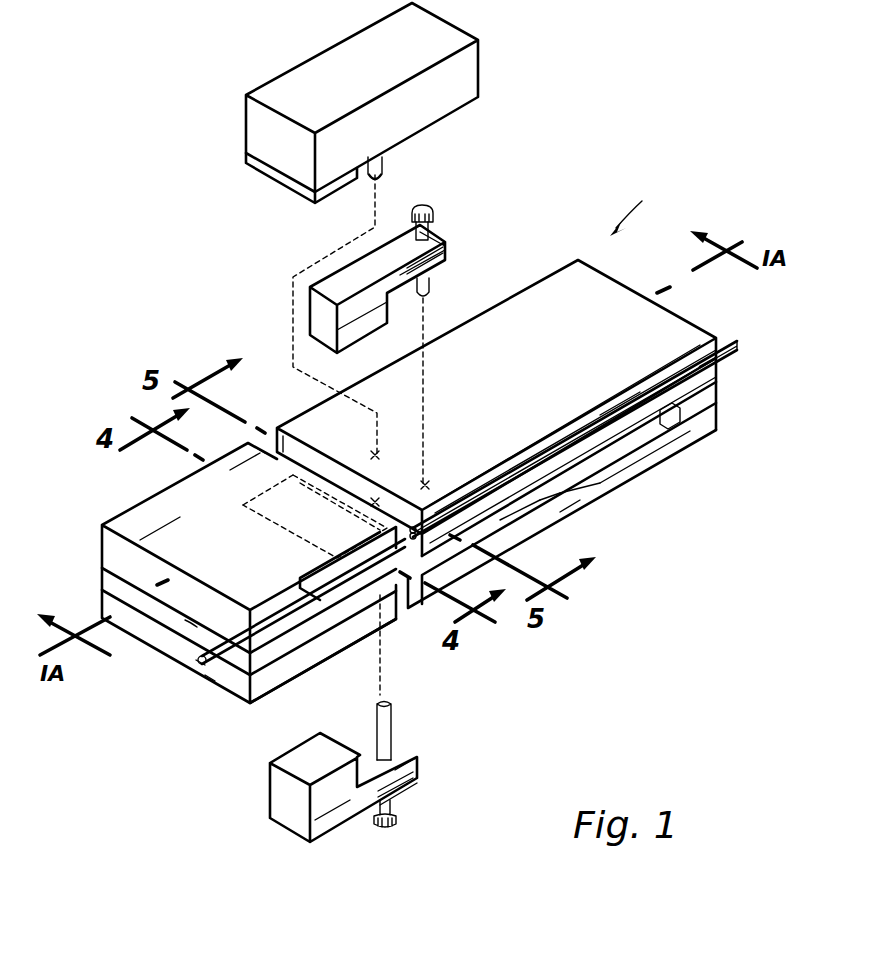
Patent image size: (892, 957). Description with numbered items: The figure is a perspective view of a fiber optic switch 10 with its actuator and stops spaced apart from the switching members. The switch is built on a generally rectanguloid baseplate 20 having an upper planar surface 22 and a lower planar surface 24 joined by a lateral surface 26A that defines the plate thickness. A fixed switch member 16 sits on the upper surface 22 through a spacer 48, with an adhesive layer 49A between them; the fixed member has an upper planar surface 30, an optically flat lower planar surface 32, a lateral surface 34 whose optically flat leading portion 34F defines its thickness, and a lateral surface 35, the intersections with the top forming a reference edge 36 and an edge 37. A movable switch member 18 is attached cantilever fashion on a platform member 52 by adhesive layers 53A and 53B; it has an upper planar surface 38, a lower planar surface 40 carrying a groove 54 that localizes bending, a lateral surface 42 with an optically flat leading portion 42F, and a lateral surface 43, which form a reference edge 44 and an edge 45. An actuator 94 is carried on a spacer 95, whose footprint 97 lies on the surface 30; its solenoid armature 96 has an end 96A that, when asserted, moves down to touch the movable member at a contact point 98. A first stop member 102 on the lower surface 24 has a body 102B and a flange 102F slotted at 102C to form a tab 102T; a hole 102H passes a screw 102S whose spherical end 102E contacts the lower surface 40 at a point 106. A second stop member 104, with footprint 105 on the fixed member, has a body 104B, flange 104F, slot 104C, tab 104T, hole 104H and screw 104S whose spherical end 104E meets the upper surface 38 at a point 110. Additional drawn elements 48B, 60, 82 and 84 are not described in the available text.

The fiber optic switch 10 is at (638, 208).
The fixed switch member 16 is at (153, 497).
The movable switch member 18 is at (310, 416).
The baseplate 20 is at (602, 467).
The upper planar surface 22 is at (602, 492).
The lower planar surface 24 is at (648, 456).
The lateral surface 26A is at (545, 541).
The upper planar surface 30 is at (207, 536).
The lower planar surface 32 is at (102, 576).
The lateral surface 34 is at (300, 664).
The leading portion of lateral surface 34F is at (393, 578).
The lateral surface 35 is at (408, 574).
The reference edge 36 is at (306, 586).
The edge 37 is at (283, 461).
The upper planar surface 38 is at (520, 389).
The lower planar surface 40 is at (636, 396).
The lateral surface 42 is at (545, 500).
The leading portion of lateral surface 42F is at (572, 506).
The lateral surface 43 is at (280, 460).
The reference edge 44 is at (548, 447).
The edge 45 is at (296, 446).
The spacer 48 is at (197, 648).
The ferrule body 48B is at (196, 661).
The adhesive layer 49A is at (185, 620).
The platform member 52 is at (718, 382).
The adhesive layer 53A is at (718, 405).
The adhesive layer 53B is at (718, 430).
The groove 54 is at (666, 428).
The groove in first stage 60 is at (214, 680).
The second optical fiber ferrule 82 is at (727, 338).
The ferrule support surface 84 is at (730, 358).
The actuator 94 is at (480, 76).
The spacer 95 is at (286, 188).
The armature 96 is at (384, 160).
The end of armature 96A is at (380, 182).
The footprint of spacer 97 is at (250, 502).
The contact point 98 is at (375, 452).
The first stop member 102 is at (270, 800).
The body 102B is at (325, 813).
The slot 102C is at (414, 774).
The spherically shaped end 102E is at (388, 702).
The flange 102F is at (417, 752).
The hole 102H is at (392, 752).
The screw 102S is at (393, 822).
The tab 102T is at (414, 779).
The second stop member 104 is at (312, 300).
The body 104B is at (352, 328).
The slot 104C is at (442, 251).
The spherical shaped end 104E is at (431, 290).
The flange 104F is at (447, 262).
The hole 104H is at (442, 240).
The screw 104S is at (430, 211).
The tab 104T is at (447, 244).
The footprint of stop 105 is at (312, 550).
The contact point 106 is at (375, 500).
The contact point 110 is at (425, 483).